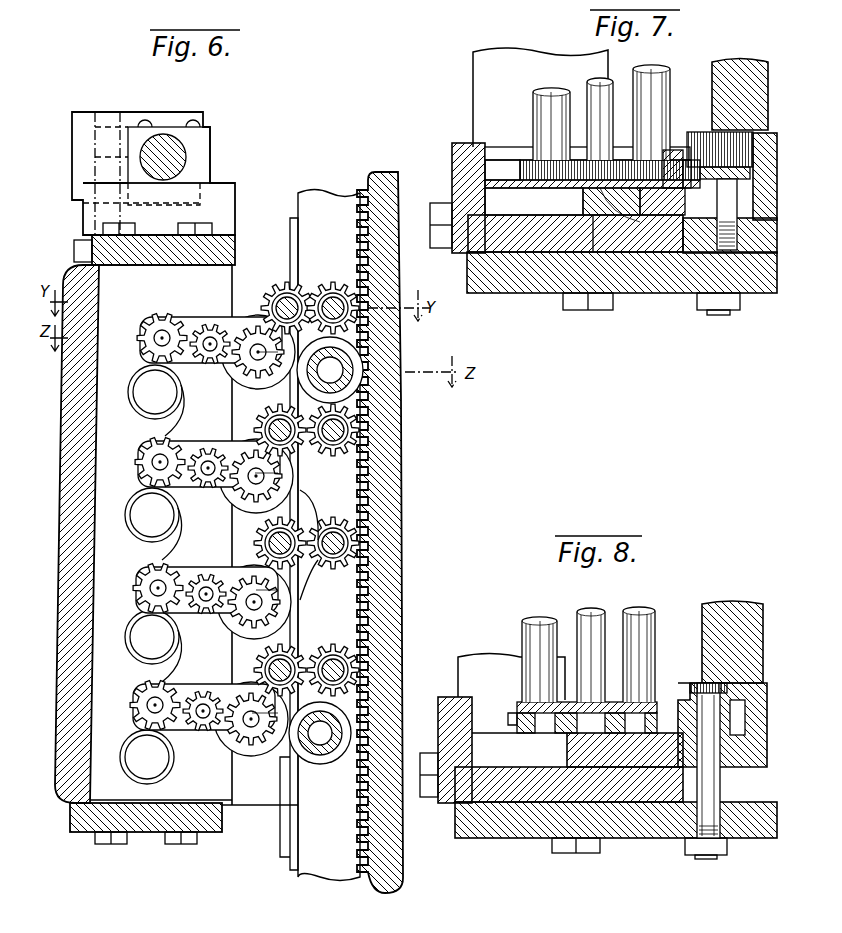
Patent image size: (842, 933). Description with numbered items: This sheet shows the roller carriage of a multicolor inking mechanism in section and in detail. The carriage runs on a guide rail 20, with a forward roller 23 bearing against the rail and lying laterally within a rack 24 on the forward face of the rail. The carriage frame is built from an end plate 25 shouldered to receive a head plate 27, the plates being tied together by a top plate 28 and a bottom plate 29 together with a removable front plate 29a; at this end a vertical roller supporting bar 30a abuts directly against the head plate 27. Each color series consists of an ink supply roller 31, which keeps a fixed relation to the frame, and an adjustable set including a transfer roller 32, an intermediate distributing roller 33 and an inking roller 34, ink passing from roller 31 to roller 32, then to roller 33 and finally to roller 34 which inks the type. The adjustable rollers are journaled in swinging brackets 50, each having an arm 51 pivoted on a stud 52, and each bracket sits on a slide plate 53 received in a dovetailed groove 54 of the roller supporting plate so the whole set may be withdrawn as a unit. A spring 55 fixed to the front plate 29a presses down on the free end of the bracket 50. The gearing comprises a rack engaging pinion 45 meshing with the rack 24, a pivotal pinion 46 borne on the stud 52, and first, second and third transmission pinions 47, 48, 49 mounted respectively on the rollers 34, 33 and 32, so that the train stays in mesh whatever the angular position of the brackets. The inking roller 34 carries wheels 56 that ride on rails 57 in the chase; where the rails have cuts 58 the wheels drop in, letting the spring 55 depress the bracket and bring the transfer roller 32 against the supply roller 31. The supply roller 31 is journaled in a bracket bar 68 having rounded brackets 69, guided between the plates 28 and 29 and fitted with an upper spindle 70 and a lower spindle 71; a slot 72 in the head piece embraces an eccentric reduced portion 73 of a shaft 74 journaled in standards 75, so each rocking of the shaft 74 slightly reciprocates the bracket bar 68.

In FIG. 6, the guide rail 20 is at (398, 192).
In FIG. 7, the guide rail 20 is at (760, 152).
In FIG. 8, the guide rail 20 is at (766, 720).
In FIG. 6, the forward roller 23 is at (404, 346).
In FIG. 7, the forward roller 23 is at (752, 136).
In FIG. 8, the forward roller 23 is at (702, 688).
In FIG. 6, the rack 24 is at (358, 205).
In FIG. 7, the rack 24 is at (740, 185).
In FIG. 8, the rack 24 is at (740, 738).
In FIG. 6, the end plate 25 is at (262, 795).
In FIG. 7, the end plate 25 is at (648, 294).
In FIG. 8, the end plate 25 is at (640, 840).
In FIG. 7, the head plate 27 is at (535, 283).
In FIG. 8, the head plate 27 is at (540, 835).
In FIG. 6, the top plate 28 is at (165, 234).
In FIG. 6, the bottom plate 29 is at (137, 832).
In FIG. 6, the front plate 29a is at (70, 565).
In FIG. 7, the front plate 29a is at (452, 152).
In FIG. 8, the front plate 29a is at (436, 705).
In FIG. 7, the roller supporting bar 30a is at (619, 202).
In FIG. 8, the roller supporting bar 30a is at (569, 774).
In FIG. 6, the ink supply roller 31 is at (135, 390).
In FIG. 6, the transfer roller 32 is at (127, 304).
In FIG. 7, the transfer roller 32 is at (533, 104).
In FIG. 8, the transfer roller 32 is at (535, 629).
In FIG. 6, the intermediate distributing roller 33 is at (205, 322).
In FIG. 7, the intermediate distributing roller 33 is at (590, 86).
In FIG. 8, the intermediate distributing roller 33 is at (605, 618).
In FIG. 6, the inking roller 34 is at (270, 306).
In FIG. 7, the inking roller 34 is at (667, 80).
In FIG. 8, the inking roller 34 is at (652, 626).
In FIG. 6, the rack engaging pinion 45 is at (338, 284).
In FIG. 7, the rack engaging pinion 45 is at (725, 165).
In FIG. 6, the pivotal pinion 46 is at (288, 282).
In FIG. 7, the pivotal pinion 46 is at (672, 150).
In FIG. 6, the first transmission pinion 47 is at (358, 469).
In FIG. 7, the first transmission pinion 47 is at (639, 205).
In FIG. 8, the first transmission pinion 47 is at (653, 755).
In FIG. 6, the second transmission pinion 48 is at (218, 518).
In FIG. 7, the second transmission pinion 48 is at (575, 233).
In FIG. 8, the second transmission pinion 48 is at (625, 750).
In FIG. 6, the third transmission pinion 49 is at (140, 346).
In FIG. 7, the third transmission pinion 49 is at (533, 202).
In FIG. 8, the third transmission pinion 49 is at (518, 738).
In FIG. 6, the swinging bracket 50 is at (200, 302).
In FIG. 7, the swinging bracket 50 is at (550, 150).
In FIG. 8, the swinging bracket 50 is at (517, 705).
In FIG. 7, the arm 51 is at (720, 149).
In FIG. 6, the stud 52 is at (312, 282).
In FIG. 7, the stud 52 is at (688, 160).
In FIG. 7, the slide plate 53 is at (592, 198).
In FIG. 7, the dovetailed groove 54 is at (628, 233).
In FIG. 7, the spring 55 is at (495, 150).
In FIG. 6, the wheel 56 is at (226, 376).
In FIG. 6, the rail 57 is at (398, 494).
In FIG. 6, the cut 58 is at (305, 610).
In FIG. 6, the bracket bar 68 is at (114, 576).
In FIG. 6, the rounded bracket 69 is at (150, 440).
In FIG. 6, the upper spindle 70 is at (100, 216).
In FIG. 6, the lower spindle 71 is at (84, 165).
In FIG. 6, the slot 72 is at (205, 142).
In FIG. 6, the eccentric reduced portion 73 is at (205, 157).
In FIG. 6, the shaft 74 is at (143, 137).
In FIG. 6, the standard 75 is at (215, 200).